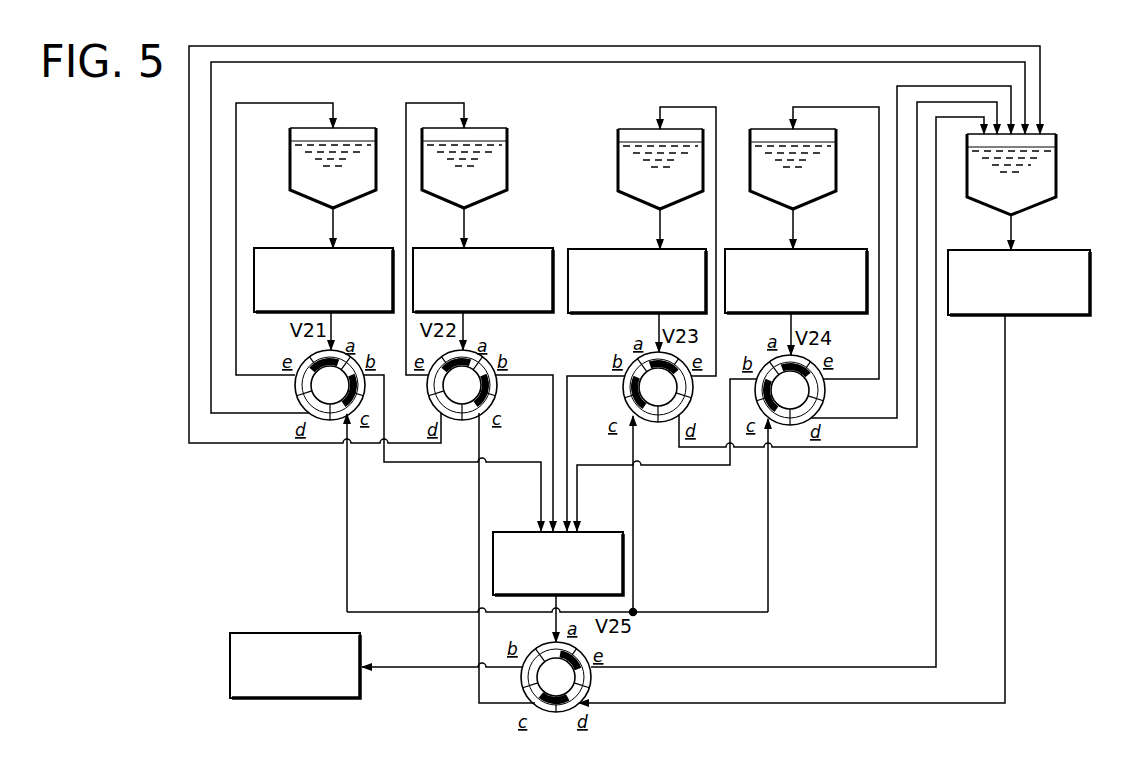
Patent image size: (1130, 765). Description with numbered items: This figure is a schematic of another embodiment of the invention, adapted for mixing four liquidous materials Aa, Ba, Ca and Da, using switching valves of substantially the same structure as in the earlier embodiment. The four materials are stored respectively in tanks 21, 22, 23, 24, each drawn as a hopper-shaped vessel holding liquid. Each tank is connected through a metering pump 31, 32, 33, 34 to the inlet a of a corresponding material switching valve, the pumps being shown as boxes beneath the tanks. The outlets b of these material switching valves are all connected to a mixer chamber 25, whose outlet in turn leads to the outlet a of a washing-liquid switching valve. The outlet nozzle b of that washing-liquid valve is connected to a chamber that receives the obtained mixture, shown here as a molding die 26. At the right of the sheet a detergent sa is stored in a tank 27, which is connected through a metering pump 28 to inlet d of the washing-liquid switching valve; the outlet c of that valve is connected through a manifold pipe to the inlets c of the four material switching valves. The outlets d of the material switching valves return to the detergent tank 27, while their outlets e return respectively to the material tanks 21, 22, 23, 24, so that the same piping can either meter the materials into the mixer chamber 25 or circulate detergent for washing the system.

The tank 21 is at (358, 135).
The tank 22 is at (488, 135).
The tank 23 is at (646, 136).
The tank 24 is at (775, 136).
The detergent tank 27 is at (1052, 142).
The metering pump 31 is at (342, 250).
The metering pump 32 is at (475, 250).
The metering pump 33 is at (645, 250).
The metering pump 34 is at (782, 250).
The metering pump 28 is at (1063, 316).
The mixer chamber 25 is at (598, 532).
The molding die 26 is at (318, 634).